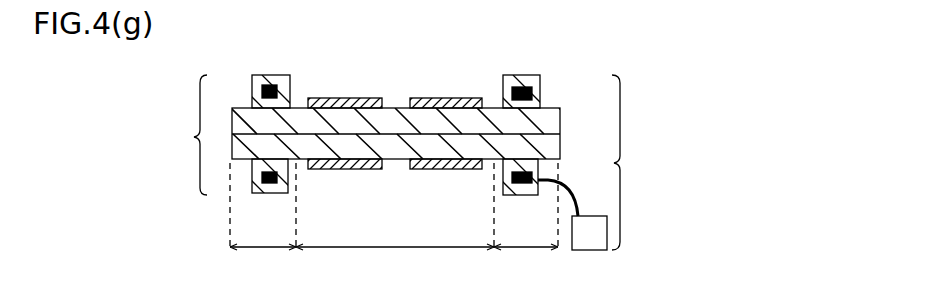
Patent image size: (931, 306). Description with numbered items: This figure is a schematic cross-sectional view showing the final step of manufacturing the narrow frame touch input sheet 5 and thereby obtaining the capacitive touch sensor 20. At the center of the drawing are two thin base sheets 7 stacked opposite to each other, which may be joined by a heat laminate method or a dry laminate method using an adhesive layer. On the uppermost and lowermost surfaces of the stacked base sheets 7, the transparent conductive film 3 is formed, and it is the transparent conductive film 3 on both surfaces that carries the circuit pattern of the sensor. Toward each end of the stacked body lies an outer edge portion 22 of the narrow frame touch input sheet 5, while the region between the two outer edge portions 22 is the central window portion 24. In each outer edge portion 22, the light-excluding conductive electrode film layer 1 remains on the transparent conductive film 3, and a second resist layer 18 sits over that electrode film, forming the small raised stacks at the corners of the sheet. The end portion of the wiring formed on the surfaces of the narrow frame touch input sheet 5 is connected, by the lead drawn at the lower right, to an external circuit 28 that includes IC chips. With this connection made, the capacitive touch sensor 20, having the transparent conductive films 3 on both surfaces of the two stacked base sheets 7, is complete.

The light-excluding conductive electrode film layer 1 is at (262, 178).
The transparent conductive film 3 is at (259, 166).
The narrow frame touch input sheet 5 is at (191, 135).
The base sheet 7 is at (551, 120).
The second resist layer 18 is at (262, 84).
The capacitive touch sensor 20 is at (633, 162).
The outer edge portion 22 is at (394, 218).
The central window portion 24 is at (395, 260).
The external circuit 28 is at (594, 250).